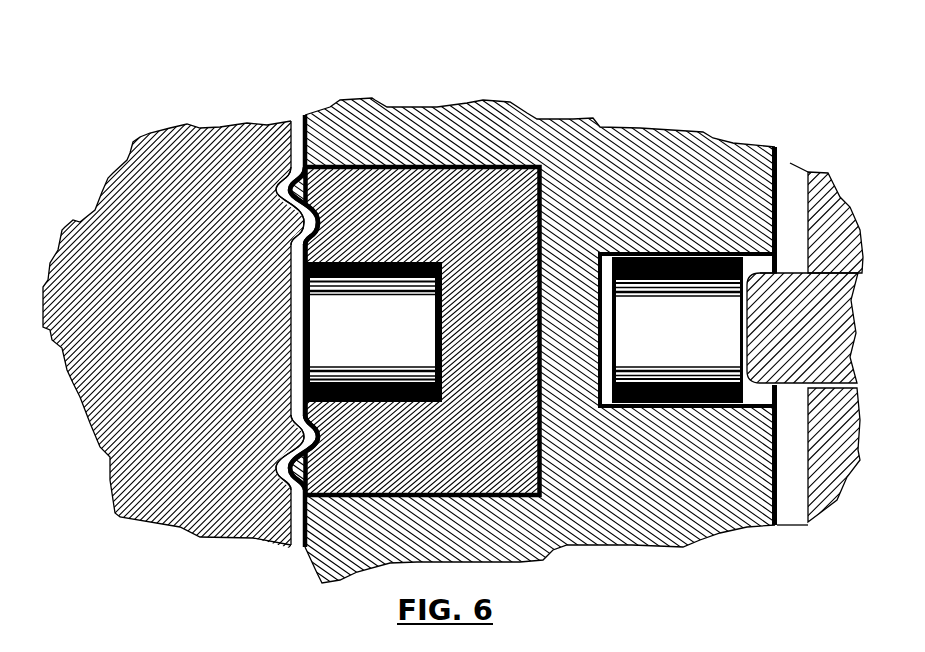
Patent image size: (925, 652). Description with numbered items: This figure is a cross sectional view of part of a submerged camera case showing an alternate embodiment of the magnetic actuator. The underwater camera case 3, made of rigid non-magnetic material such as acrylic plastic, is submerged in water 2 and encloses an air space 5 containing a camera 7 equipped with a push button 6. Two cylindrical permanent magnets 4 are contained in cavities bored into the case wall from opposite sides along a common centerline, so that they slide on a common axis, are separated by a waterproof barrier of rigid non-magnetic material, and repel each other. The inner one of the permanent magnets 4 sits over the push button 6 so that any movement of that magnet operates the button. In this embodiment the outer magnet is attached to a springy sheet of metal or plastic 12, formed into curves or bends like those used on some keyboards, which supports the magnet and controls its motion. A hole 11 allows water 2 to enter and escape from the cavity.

The water 2 is at (73, 222).
The underwater camera case 3 is at (373, 130).
The permanent magnets 4 is at (413, 260).
The air space 5 is at (780, 222).
The push button 6 is at (790, 273).
The camera 7 is at (840, 220).
The hole 11 is at (283, 243).
The springy sheet of metal or plastic 12 is at (293, 325).